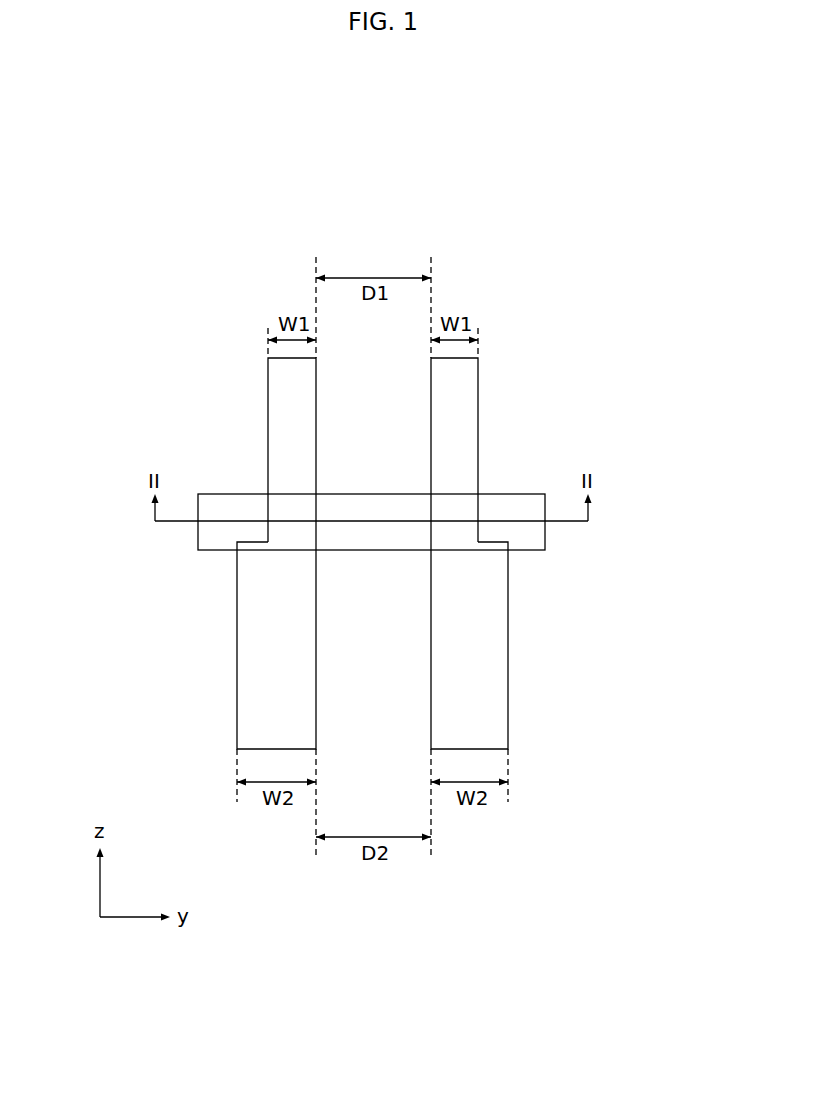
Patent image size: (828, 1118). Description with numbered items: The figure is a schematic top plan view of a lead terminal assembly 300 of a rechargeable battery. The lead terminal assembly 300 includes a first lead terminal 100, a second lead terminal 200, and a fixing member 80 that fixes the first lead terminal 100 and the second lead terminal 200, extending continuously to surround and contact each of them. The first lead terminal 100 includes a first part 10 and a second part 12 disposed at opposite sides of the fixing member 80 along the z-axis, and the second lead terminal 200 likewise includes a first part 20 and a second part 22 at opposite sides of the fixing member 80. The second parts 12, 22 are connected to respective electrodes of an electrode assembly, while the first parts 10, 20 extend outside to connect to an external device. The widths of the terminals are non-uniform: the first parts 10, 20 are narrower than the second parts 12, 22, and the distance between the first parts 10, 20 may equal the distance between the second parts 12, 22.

The first part 10 is at (275, 413).
The second part 12 is at (242, 595).
The first part 20 is at (470, 412).
The second part 22 is at (502, 595).
The fixing member 80 is at (373, 544).
The first lead terminal 100 is at (107, 615).
The second lead terminal 200 is at (636, 615).
The lead terminal assembly 300 is at (393, 221).